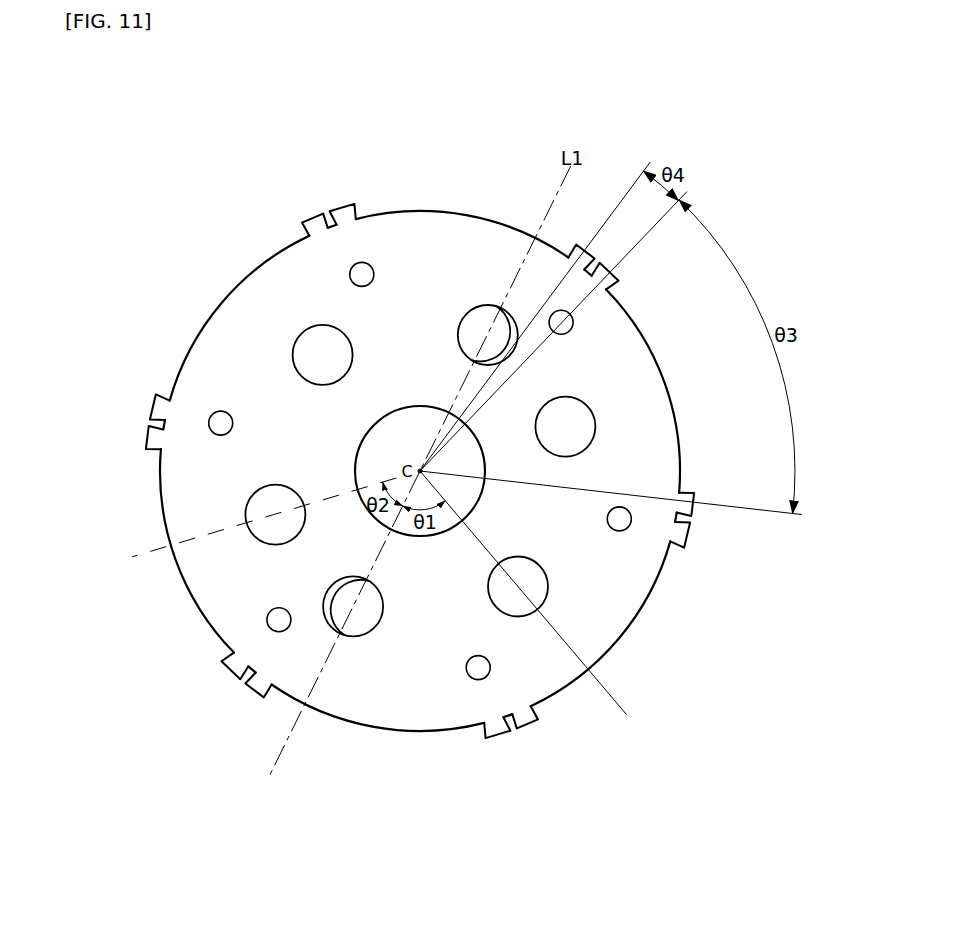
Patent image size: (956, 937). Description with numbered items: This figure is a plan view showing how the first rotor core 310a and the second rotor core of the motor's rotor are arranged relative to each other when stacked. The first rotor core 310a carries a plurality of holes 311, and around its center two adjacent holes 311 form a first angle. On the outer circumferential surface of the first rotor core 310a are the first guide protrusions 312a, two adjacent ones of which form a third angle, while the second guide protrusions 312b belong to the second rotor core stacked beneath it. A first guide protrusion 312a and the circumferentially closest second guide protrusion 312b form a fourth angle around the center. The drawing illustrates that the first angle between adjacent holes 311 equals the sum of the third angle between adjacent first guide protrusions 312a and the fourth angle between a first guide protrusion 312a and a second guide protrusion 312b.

The first rotor core 310a is at (240, 330).
The holes 311 is at (358, 622).
The first guide protrusions 312a is at (335, 198).
The second guide protrusions 312b is at (304, 209).